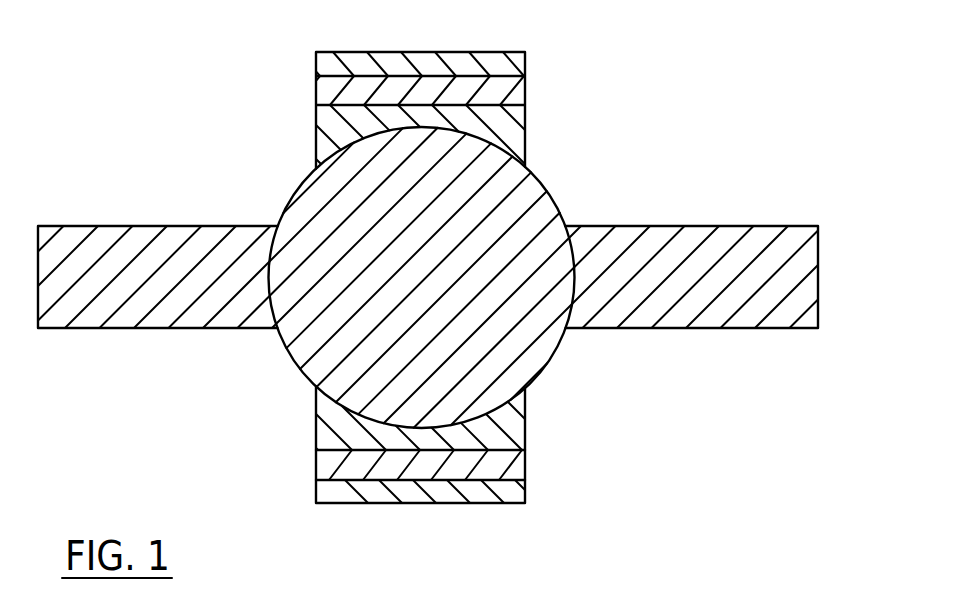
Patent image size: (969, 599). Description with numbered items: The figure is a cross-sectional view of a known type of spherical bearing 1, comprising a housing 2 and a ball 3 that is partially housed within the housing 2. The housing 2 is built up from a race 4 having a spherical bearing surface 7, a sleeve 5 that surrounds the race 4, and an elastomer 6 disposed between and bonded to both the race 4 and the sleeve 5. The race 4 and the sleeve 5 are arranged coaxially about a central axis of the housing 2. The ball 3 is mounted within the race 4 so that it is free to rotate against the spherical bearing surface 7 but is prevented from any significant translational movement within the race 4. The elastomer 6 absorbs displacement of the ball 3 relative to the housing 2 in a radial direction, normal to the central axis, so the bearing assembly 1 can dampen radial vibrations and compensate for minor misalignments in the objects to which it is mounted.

The spherical bearing 1 is at (614, 56).
The housing 2 is at (308, 91).
The ball 3 is at (300, 217).
The race 4 is at (513, 432).
The sleeve 5 is at (517, 500).
The elastomer 6 is at (513, 475).
The spherical bearing surface 7 is at (518, 142).